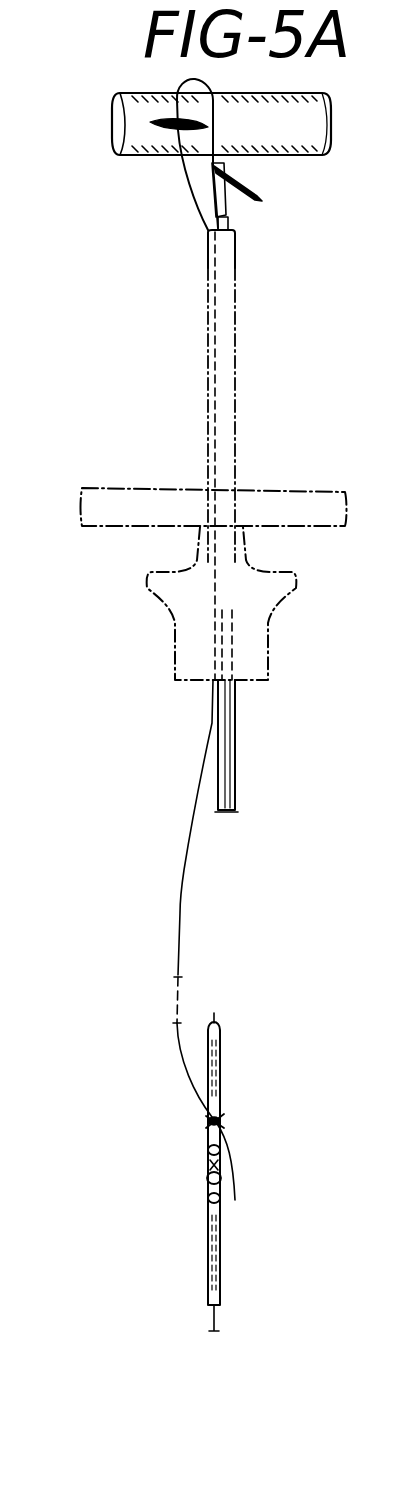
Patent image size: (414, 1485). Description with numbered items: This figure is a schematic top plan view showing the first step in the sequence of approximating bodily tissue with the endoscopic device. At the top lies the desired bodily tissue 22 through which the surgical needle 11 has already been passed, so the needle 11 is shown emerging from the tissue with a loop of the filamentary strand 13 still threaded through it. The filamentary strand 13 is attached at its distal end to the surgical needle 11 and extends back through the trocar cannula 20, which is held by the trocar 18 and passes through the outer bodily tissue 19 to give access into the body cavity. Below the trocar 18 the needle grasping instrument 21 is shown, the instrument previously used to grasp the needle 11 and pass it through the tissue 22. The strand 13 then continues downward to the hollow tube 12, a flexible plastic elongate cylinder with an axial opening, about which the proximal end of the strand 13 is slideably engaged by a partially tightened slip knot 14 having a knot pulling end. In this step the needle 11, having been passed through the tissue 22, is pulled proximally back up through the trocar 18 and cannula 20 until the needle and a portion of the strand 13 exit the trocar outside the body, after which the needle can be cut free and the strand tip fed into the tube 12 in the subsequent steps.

The surgical needle 11 is at (246, 186).
The hollow tube 12 is at (205, 1272).
The filamentary strand 13 is at (187, 188).
The slip knot 14 is at (228, 1117).
The trocar 18 is at (268, 635).
The bodily tissue 19 is at (95, 527).
The trocar cannula 20 is at (236, 308).
The needle grasping instrument 21 is at (236, 770).
The bodily tissue 22 is at (148, 158).